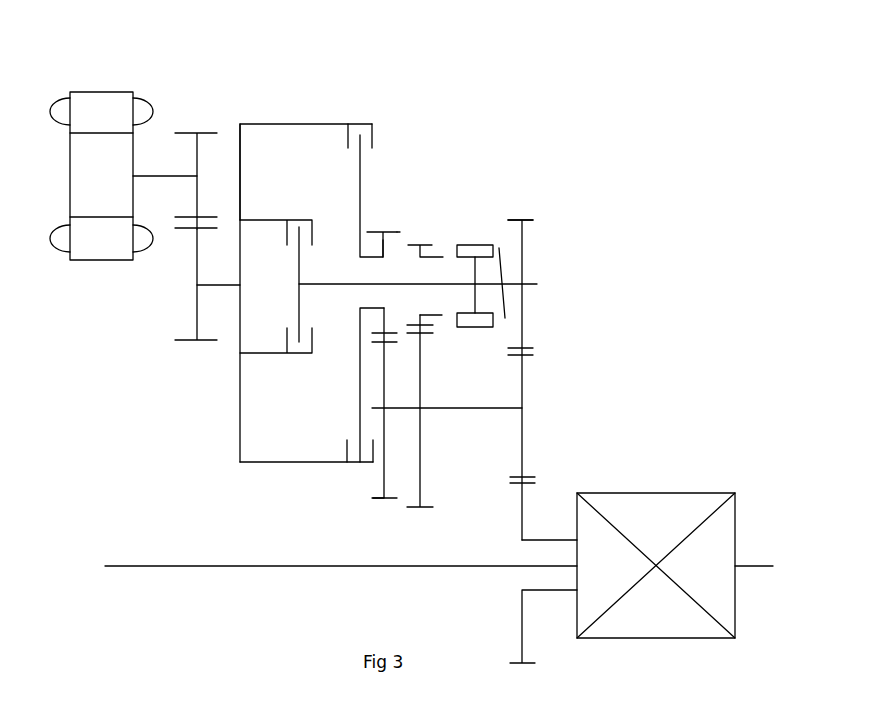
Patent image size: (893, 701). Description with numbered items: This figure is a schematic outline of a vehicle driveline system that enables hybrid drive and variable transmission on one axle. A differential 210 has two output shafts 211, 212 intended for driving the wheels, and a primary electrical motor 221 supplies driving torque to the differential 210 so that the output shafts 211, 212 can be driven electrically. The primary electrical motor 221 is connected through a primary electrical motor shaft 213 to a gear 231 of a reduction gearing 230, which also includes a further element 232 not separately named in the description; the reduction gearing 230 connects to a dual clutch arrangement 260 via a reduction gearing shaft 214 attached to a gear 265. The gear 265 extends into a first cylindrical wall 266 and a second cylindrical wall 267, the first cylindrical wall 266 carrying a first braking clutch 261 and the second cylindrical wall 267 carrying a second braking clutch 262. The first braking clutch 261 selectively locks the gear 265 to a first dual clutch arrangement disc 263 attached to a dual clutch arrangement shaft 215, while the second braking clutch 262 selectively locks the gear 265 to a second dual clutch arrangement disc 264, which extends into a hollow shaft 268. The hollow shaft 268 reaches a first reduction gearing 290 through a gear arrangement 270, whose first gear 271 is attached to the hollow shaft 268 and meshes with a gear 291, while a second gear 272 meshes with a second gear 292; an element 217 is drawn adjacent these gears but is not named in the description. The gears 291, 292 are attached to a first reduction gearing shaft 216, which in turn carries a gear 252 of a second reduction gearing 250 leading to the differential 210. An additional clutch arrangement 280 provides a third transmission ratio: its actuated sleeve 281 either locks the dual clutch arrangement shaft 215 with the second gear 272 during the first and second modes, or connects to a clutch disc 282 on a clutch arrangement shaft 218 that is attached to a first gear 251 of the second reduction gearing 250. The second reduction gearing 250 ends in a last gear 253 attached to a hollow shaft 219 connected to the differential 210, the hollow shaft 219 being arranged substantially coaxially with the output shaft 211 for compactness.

The differential 210 is at (662, 492).
The output shaft 211 is at (238, 563).
The output shaft 212 is at (758, 567).
The primary electrical motor shaft 213 is at (165, 175).
The reduction gearing shaft 214 is at (228, 287).
The dual clutch arrangement shaft 215 is at (345, 287).
The first reduction gearing shaft 216 is at (468, 410).
The brake 217 is at (442, 312).
The clutch arrangement shaft 218 is at (537, 284).
The hollow shaft 219 is at (552, 542).
The primary electrical motor 221 is at (122, 90).
The reduction gearing 230 is at (212, 121).
The gear 231 is at (195, 195).
The drive shaft 232 is at (193, 310).
The second reduction gearing 250 is at (526, 216).
The first gear 251 is at (522, 248).
The gear 252 is at (523, 432).
The carrier 253 is at (517, 525).
The dual clutch arrangement 260 is at (362, 118).
The first braking clutch 261 is at (304, 218).
The second braking clutch 262 is at (357, 122).
The first dual clutch arrangement gear or disc 263 is at (298, 270).
The second dual clutch arrangement gear or disc 264 is at (358, 385).
The gear 265 is at (238, 437).
The first cylindrical wall 266 is at (272, 355).
The second cylindrical wall 267 is at (290, 127).
The hollow shaft 268 is at (363, 262).
The gear arrangement 270 is at (423, 201).
The first gear 271 is at (385, 233).
The second gear 272 is at (425, 238).
The additional clutch arrangement 280 is at (471, 227).
The actuated sleeve 281 is at (477, 327).
The clutch disc 282 is at (484, 266).
The first reduction gearing 290 is at (367, 512).
The gear 291 is at (385, 502).
The second gear 292 is at (433, 480).